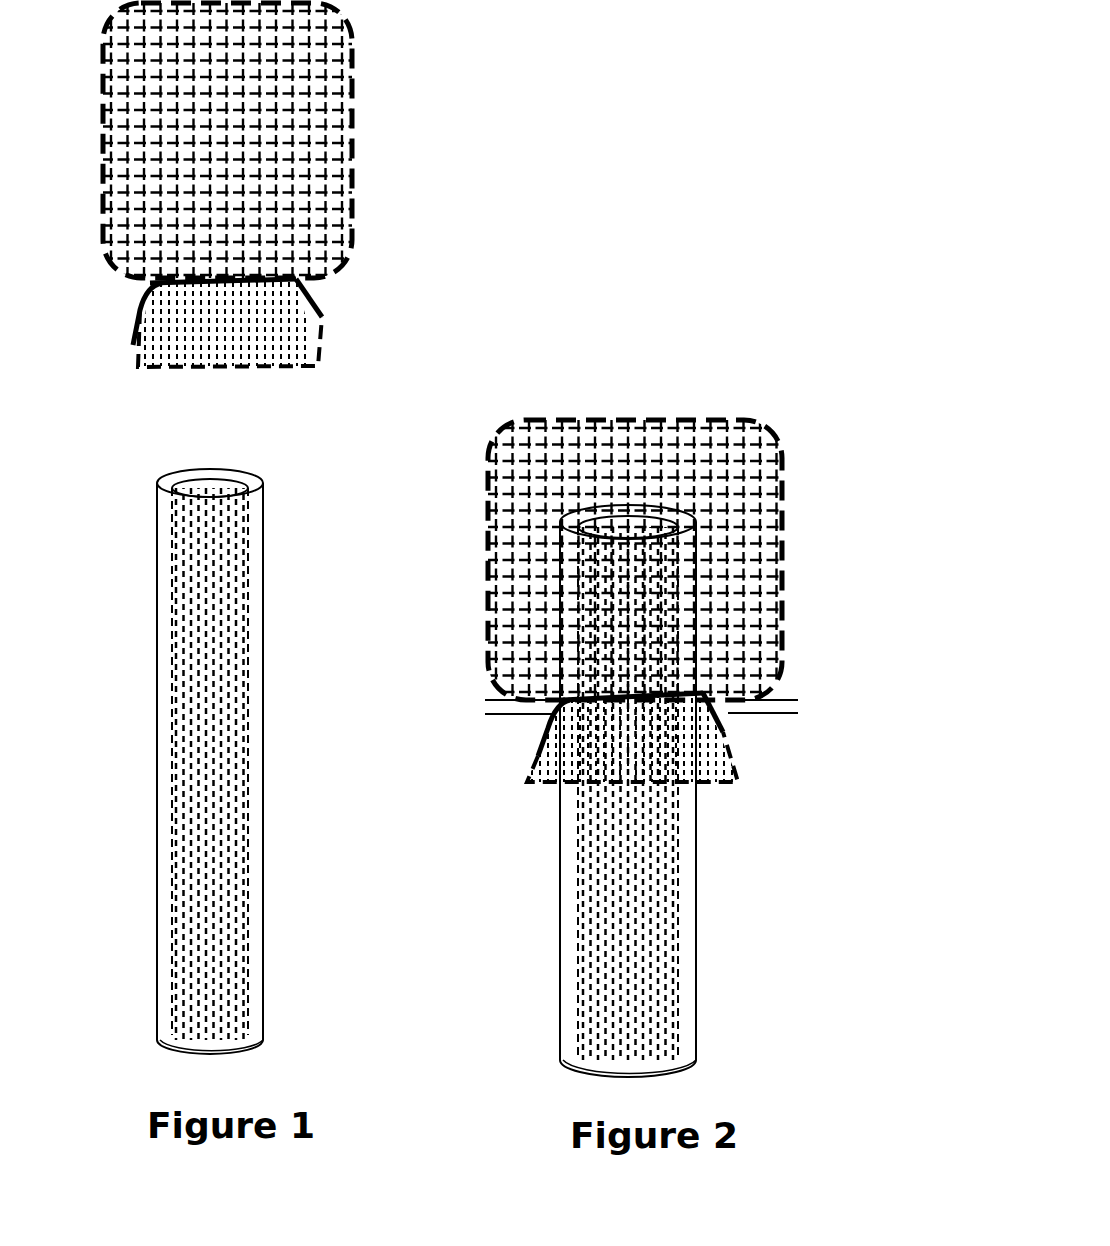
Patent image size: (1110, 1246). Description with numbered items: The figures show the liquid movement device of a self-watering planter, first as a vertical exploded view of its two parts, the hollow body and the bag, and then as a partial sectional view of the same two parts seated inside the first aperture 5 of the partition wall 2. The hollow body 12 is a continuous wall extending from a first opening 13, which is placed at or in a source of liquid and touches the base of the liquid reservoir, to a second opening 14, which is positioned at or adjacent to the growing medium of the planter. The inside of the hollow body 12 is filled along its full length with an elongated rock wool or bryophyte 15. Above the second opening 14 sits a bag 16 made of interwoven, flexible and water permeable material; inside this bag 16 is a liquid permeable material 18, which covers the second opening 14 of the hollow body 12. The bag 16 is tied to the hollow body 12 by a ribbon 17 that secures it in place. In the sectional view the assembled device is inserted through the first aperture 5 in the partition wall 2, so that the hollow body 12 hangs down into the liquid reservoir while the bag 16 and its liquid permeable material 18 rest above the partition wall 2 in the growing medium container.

In FIG. 2, the partition wall 2 is at (514, 720).
In FIG. 2, the first aperture 5 is at (728, 723).
In FIG. 1, the hollow body 12 is at (142, 733).
In FIG. 2, the hollow body 12 is at (601, 692).
In FIG. 1, the first opening 13 is at (166, 1032).
In FIG. 2, the first opening 13 is at (652, 1056).
In FIG. 1, the second opening 14 is at (165, 489).
In FIG. 2, the second opening 14 is at (637, 515).
In FIG. 1, the rock wool or bryophyte 15 is at (175, 665).
In FIG. 2, the rock wool or bryophyte 15 is at (598, 982).
In FIG. 1, the bag 16 is at (323, 140).
In FIG. 2, the bag 16 is at (698, 530).
In FIG. 1, the ribbon 17 is at (137, 310).
In FIG. 1, the liquid permeable material 18 is at (282, 157).
In FIG. 2, the liquid permeable material 18 is at (737, 540).